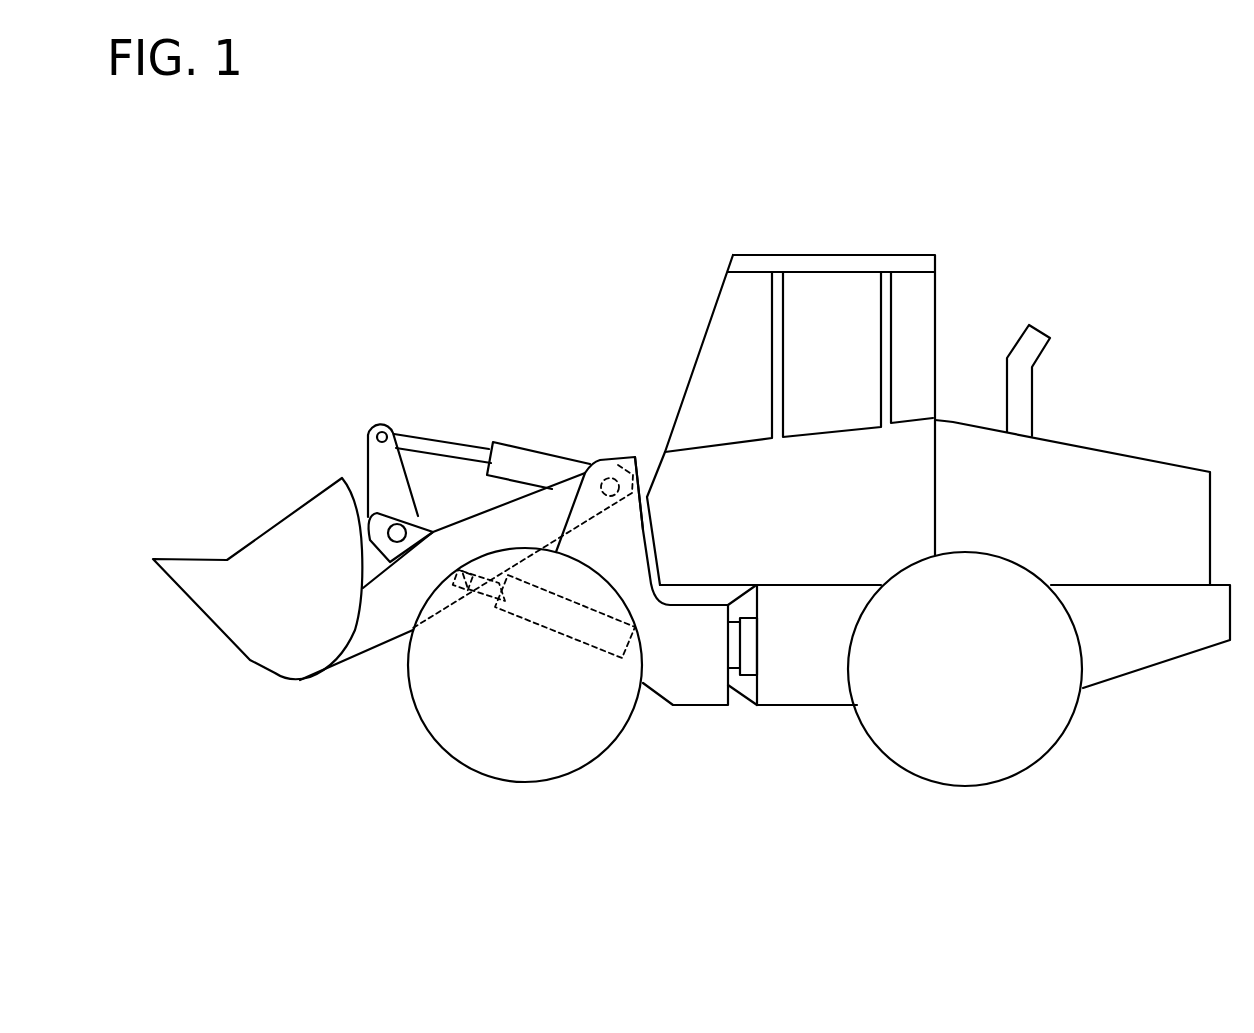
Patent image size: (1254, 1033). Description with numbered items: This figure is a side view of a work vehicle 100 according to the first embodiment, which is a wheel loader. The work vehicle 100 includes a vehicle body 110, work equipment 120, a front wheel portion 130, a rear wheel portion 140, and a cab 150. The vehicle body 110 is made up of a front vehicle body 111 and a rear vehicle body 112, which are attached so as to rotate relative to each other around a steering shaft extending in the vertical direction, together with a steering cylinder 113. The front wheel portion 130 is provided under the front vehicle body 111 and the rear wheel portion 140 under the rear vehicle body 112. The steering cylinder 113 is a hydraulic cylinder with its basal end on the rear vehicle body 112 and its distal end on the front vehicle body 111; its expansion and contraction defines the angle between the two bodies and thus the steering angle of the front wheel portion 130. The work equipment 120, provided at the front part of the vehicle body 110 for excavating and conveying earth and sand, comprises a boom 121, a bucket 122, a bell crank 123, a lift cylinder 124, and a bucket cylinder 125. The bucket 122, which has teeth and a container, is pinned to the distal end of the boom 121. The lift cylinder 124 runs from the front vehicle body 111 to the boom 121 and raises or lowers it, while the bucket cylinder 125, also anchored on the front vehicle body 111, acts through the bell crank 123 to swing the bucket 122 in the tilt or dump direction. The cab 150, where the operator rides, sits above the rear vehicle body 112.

The work vehicle 100 is at (1040, 196).
The vehicle body 110 is at (707, 842).
The front vehicle body 111 is at (685, 708).
The rear vehicle body 112 is at (793, 708).
The steering cylinder 113 is at (745, 676).
The work equipment 120 is at (398, 555).
The boom 121 is at (365, 590).
The bucket 122 is at (253, 672).
The bell crank 123 is at (378, 420).
The lift cylinder 124 is at (523, 618).
The bucket cylinder 125 is at (510, 444).
The front wheel portion 130 is at (505, 783).
The rear wheel portion 140 is at (923, 787).
The cab 150 is at (782, 255).